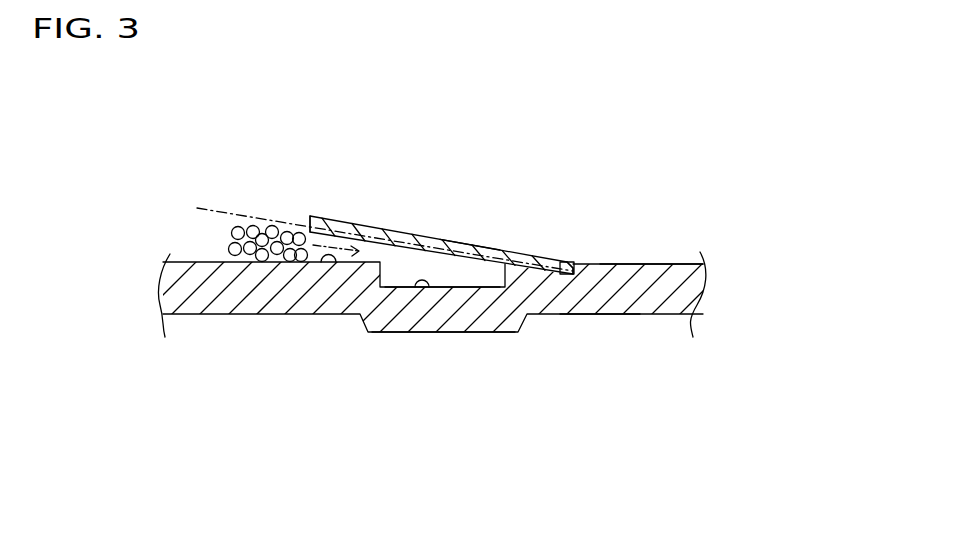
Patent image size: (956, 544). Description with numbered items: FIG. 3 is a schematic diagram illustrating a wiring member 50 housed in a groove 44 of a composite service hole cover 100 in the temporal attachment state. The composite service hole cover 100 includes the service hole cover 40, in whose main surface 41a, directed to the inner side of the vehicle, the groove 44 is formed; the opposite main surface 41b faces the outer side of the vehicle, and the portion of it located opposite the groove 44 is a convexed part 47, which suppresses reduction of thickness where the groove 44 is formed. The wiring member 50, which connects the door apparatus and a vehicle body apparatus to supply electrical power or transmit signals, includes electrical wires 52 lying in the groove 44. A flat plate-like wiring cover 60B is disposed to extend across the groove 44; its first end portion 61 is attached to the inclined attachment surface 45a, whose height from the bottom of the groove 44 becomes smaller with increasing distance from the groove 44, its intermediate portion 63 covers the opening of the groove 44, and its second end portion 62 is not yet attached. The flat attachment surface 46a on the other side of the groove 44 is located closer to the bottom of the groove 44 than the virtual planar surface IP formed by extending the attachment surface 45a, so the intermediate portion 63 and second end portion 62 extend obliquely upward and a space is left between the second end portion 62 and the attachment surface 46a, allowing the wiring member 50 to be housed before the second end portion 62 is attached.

The composite service hole cover 100 is at (668, 138).
The service hole cover 40 is at (545, 316).
The main surface 41a is at (678, 264).
The main surface 41b is at (594, 316).
The groove 44 is at (421, 287).
The attachment surface 45a is at (563, 263).
The attachment surface 46a is at (323, 262).
The convexed part 47 is at (482, 332).
The wiring member 50 is at (163, 198).
The electrical wire 52 is at (235, 236).
The wiring cover 60B is at (415, 232).
The first end portion 61 is at (518, 253).
The second end portion 62 is at (371, 227).
The intermediate portion 63 is at (471, 245).
The virtual planar surface IP is at (234, 207).